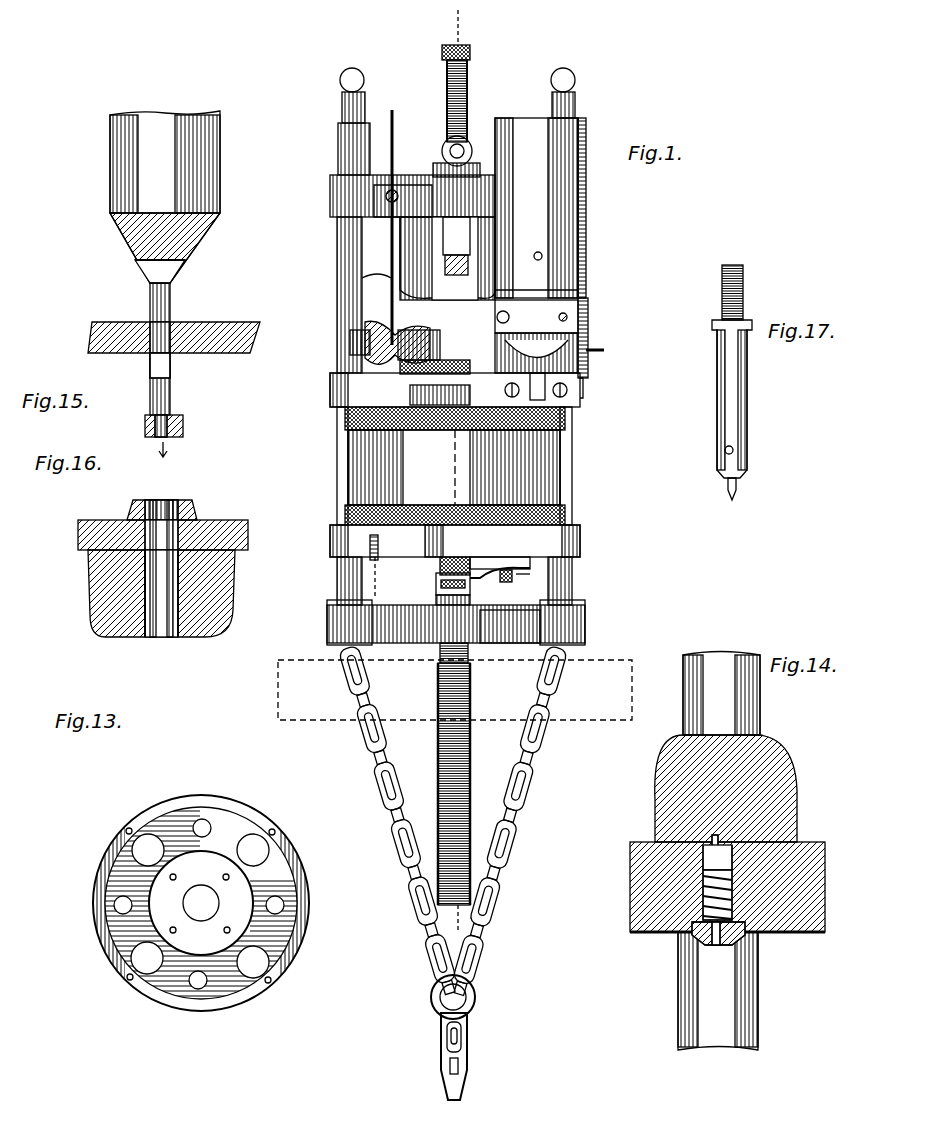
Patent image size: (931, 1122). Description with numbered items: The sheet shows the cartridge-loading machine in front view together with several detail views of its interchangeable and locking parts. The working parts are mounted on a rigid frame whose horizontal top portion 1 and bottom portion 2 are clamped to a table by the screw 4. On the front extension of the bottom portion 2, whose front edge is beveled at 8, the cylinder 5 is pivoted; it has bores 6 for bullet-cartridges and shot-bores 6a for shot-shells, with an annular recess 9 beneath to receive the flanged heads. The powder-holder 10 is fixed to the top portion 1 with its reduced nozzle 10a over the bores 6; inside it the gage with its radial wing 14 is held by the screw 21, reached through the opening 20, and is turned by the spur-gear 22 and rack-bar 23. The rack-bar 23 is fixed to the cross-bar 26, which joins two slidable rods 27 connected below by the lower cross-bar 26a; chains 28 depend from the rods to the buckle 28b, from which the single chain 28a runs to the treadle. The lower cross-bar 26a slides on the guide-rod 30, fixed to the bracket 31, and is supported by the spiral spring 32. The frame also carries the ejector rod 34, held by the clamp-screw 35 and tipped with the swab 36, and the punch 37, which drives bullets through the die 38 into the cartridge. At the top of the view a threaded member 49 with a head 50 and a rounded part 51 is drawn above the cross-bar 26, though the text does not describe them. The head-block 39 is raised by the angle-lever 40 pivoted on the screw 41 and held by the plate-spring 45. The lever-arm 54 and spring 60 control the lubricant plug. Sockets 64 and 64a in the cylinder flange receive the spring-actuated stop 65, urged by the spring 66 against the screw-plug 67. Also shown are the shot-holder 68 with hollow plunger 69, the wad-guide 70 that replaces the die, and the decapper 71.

In FIG. 1, the horizontal top portion of frame 1 is at (340, 390).
In FIG. 16, the horizontal top portion of frame 1 is at (92, 522).
In FIG. 1, the bottom portion of frame 2 is at (335, 533).
In FIG. 14, the bottom portion of frame 2 is at (825, 895).
In FIG. 1, the screw 4 is at (467, 18).
In FIG. 1, the cylinder 5 is at (455, 466).
In FIG. 16, the cylinder 5 is at (90, 592).
In FIG. 13, the cylinder 5 is at (245, 810).
In FIG. 14, the cylinder 5 is at (772, 762).
In FIG. 13, the bores 6 is at (205, 820).
In FIG. 16, the shot-bores 6a is at (163, 637).
In FIG. 13, the shot-bores 6a is at (138, 845).
In FIG. 1, the beveled front edge 8 is at (500, 553).
In FIG. 13, the annular recess 9 is at (203, 899).
In FIG. 1, the powder-holder 10 is at (536, 208).
In FIG. 1, the reduced nozzle 10a is at (580, 383).
In FIG. 1, the radial wing 14 is at (388, 486).
In FIG. 1, the opening 20 is at (505, 312).
In FIG. 1, the screw 21 is at (560, 316).
In FIG. 1, the spur-gear 22 is at (585, 300).
In FIG. 1, the rack-bar 23 is at (588, 210).
In FIG. 1, the cross-bar 26 is at (456, 410).
In FIG. 15, the cross-bar 26 is at (200, 322).
In FIG. 1, the lower cross-bar 26a is at (520, 606).
In FIG. 1, the slidable rods 27 is at (577, 102).
In FIG. 14, the slidable rods 27 is at (695, 696).
In FIG. 1, the chains 28 is at (395, 830).
In FIG. 1, the chain 28a is at (444, 1074).
In FIG. 1, the buckle 28b is at (476, 996).
In FIG. 1, the guide-rod 30 is at (469, 815).
In FIG. 1, the bracket 31 is at (436, 573).
In FIG. 1, the spiral spring 32 is at (471, 697).
In FIG. 1, the rod 34 is at (393, 118).
In FIG. 1, the clamp-screw 35 is at (400, 185).
In FIG. 1, the swab 36 is at (370, 360).
In FIG. 1, the punch 37 is at (448, 240).
In FIG. 1, the die 38 is at (440, 370).
In FIG. 1, the slidable block 39 is at (456, 566).
In FIG. 1, the angle-lever 40 is at (500, 581).
In FIG. 1, the screw 41 is at (515, 579).
In FIG. 1, the plate-spring 45 is at (516, 576).
In FIG. 1, the screw 49 is at (468, 93).
In FIG. 1, the screw head 50 is at (471, 50).
In FIG. 1, the swivel 51 is at (463, 143).
In FIG. 1, the lever-arm 54 is at (362, 282).
In FIG. 1, the spiral spring 60 is at (418, 340).
In FIG. 13, the sockets 64 is at (275, 831).
In FIG. 14, the sockets 64 is at (715, 838).
In FIG. 13, the sockets 64a is at (226, 877).
In FIG. 14, the spring-actuated stop 65 is at (712, 850).
In FIG. 14, the spiral spring 66 is at (705, 890).
In FIG. 1, the screw-plug 67 is at (355, 565).
In FIG. 14, the screw-plug 67 is at (735, 940).
In FIG. 15, the shot-holder 68 is at (165, 197).
In FIG. 15, the hollow punch or plunger 69 is at (178, 388).
In FIG. 16, the wad-guide 70 is at (162, 500).
In FIG. 17, the decapper 71 is at (748, 395).